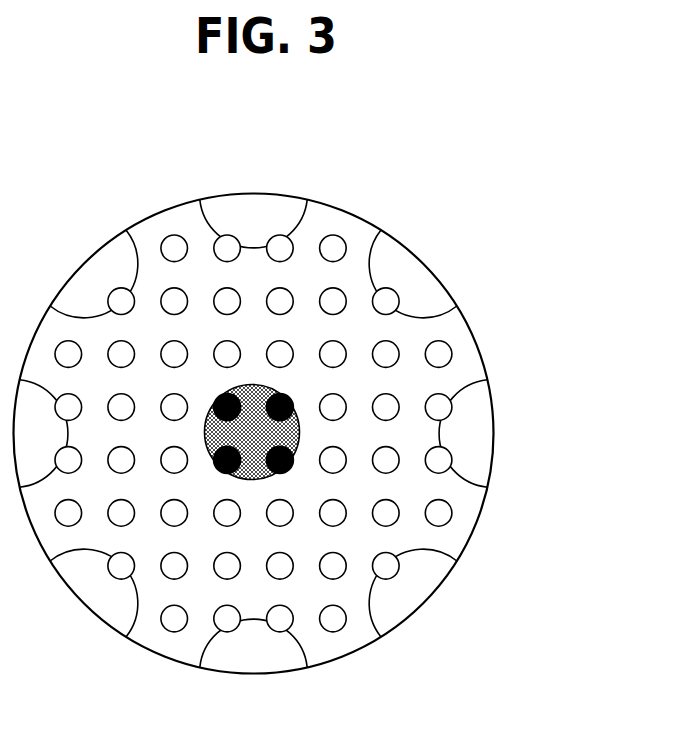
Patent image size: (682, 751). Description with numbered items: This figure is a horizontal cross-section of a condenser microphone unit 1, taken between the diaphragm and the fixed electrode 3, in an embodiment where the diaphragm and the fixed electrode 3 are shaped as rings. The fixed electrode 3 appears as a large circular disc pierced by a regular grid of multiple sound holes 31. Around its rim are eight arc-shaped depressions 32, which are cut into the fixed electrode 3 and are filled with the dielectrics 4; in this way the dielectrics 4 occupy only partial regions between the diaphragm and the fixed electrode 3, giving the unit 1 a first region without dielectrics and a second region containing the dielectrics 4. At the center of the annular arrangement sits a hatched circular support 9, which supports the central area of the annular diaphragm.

The condenser microphone unit 1 is at (294, 383).
The fixed electrode 3 is at (478, 343).
The dielectrics 4 is at (478, 453).
The support 9 is at (260, 446).
The sound holes 31 is at (451, 510).
The depressions 32 is at (468, 390).